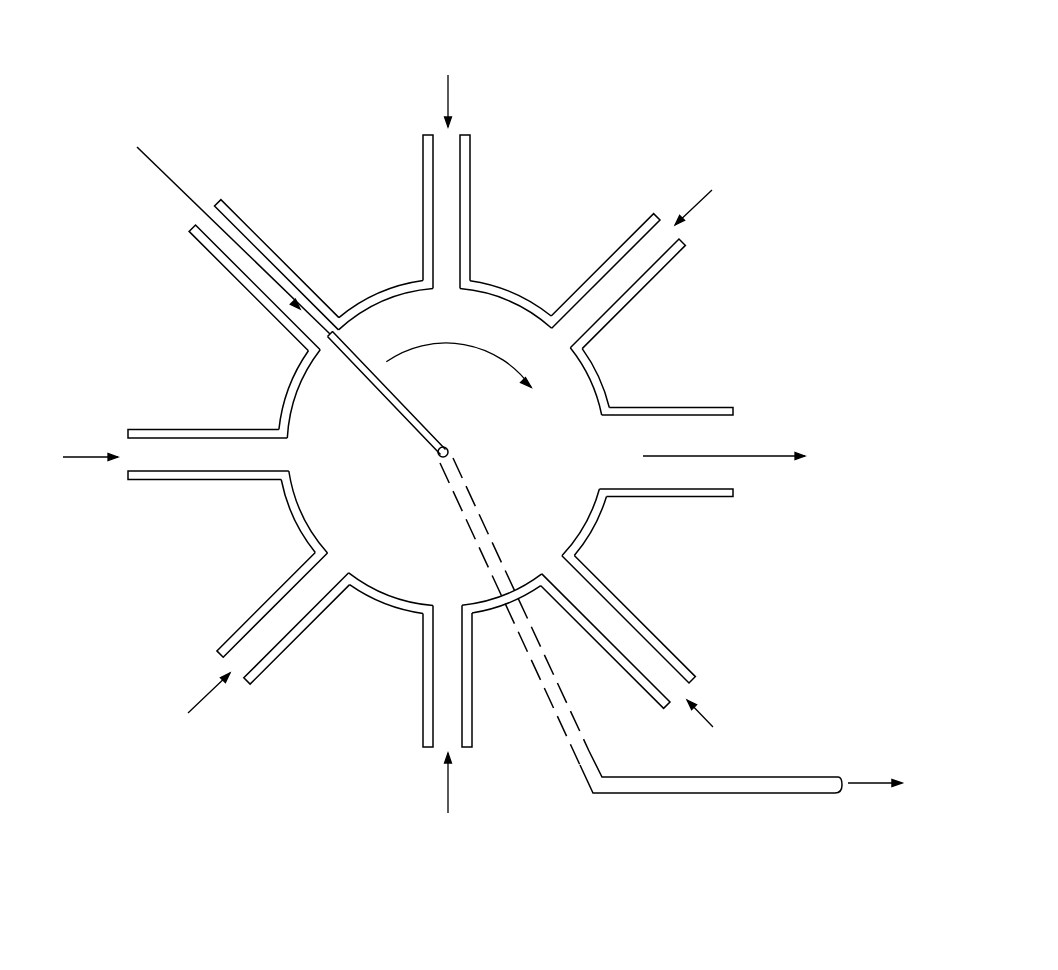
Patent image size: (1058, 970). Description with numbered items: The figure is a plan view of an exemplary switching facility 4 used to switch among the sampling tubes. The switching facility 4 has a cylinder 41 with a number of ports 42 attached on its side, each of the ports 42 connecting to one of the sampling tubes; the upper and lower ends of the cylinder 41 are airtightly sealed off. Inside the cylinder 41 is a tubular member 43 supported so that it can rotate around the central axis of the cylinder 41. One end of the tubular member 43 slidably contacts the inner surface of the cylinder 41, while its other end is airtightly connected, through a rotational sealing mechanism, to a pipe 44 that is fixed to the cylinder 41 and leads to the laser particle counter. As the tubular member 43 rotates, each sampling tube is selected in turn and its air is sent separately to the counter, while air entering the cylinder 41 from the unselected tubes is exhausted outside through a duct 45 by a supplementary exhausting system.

The switching facility 4 is at (603, 115).
The cylinder 41 is at (290, 533).
The ports 42 is at (471, 178).
The tubular member 43 is at (367, 385).
The pipe 44 is at (703, 797).
The duct 45 is at (706, 408).